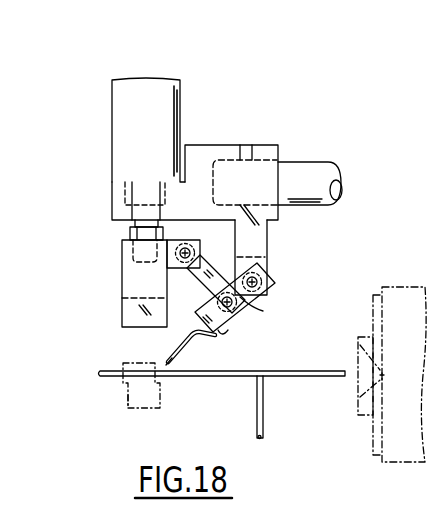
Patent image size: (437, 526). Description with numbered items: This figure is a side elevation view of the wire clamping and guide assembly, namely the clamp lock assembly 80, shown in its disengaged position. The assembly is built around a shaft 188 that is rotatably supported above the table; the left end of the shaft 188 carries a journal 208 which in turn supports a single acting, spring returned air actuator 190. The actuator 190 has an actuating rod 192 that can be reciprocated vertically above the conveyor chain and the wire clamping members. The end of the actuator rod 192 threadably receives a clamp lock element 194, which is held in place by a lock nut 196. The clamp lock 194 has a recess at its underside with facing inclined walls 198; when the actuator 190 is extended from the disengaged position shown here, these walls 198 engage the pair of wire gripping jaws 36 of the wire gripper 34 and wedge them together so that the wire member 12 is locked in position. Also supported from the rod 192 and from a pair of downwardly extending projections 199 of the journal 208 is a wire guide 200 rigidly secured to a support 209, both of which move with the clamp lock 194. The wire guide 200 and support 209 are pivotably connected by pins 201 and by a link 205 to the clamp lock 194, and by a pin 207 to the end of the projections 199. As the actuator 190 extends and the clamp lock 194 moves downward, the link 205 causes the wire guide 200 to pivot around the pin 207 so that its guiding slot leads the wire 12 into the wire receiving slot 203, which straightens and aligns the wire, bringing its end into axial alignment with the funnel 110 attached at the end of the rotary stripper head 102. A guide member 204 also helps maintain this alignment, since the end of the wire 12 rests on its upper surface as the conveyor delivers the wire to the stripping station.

The clamp lock assembly 80 is at (100, 255).
The single acting, spring returned air actuator 190 is at (118, 93).
The actuating rod 192 is at (115, 220).
The lock nut 196 is at (130, 232).
The clamp lock element 194 is at (122, 285).
The inclined walls 198 is at (128, 303).
The journal 208 is at (208, 148).
The shaft 188 is at (305, 162).
The downwardly extending projections 199 is at (265, 262).
The link 205 is at (207, 262).
The pin 207 is at (270, 280).
The support 209 is at (243, 305).
The pins 201 is at (186, 268).
The wire guide 200 is at (193, 336).
The wire receiving slot 203 is at (172, 349).
The insulated wire 12 is at (178, 377).
The jaws 36 is at (127, 388).
The wire grippers 34 is at (130, 405).
The guide member 204 is at (257, 427).
The rotary stripper head 102 is at (397, 282).
The funnel member 110 is at (358, 398).